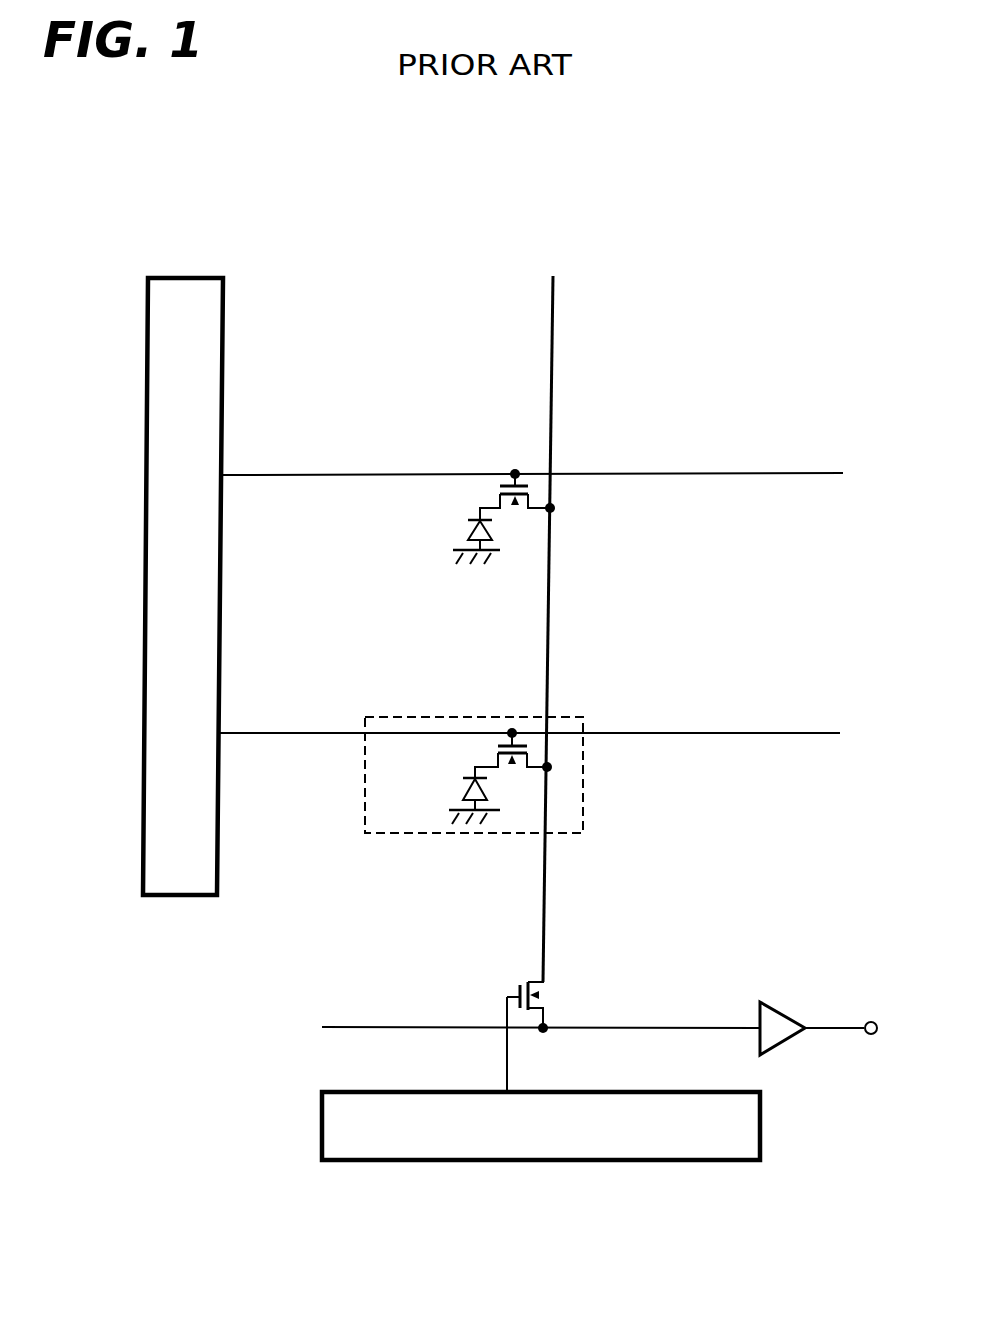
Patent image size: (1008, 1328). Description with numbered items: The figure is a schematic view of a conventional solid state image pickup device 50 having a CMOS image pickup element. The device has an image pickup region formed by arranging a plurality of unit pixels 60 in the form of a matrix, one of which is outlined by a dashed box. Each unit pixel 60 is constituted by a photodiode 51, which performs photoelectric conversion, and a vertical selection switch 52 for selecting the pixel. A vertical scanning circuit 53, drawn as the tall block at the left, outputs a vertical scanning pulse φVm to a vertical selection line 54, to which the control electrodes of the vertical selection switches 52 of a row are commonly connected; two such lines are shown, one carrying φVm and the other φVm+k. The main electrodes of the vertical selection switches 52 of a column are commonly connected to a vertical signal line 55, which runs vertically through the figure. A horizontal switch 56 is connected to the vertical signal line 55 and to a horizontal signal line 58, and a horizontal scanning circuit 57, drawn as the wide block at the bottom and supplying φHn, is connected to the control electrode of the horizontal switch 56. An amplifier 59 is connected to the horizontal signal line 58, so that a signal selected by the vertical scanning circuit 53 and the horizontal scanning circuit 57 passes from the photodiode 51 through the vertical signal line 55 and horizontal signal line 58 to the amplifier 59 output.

The solid state image pickup device 50 is at (887, 694).
The photodiode 51 is at (470, 526).
The vertical selection switch 52 is at (495, 494).
The vertical scanning circuit 53 is at (183, 276).
The vertical selection line 54 is at (330, 473).
The vertical signal line 55 is at (553, 343).
The horizontal switch 56 is at (558, 995).
The horizontal scanning circuit 57 is at (577, 1164).
The horizontal signal line 58 is at (720, 1026).
The amplifier 59 is at (782, 1010).
The unit pixel 60 is at (583, 796).